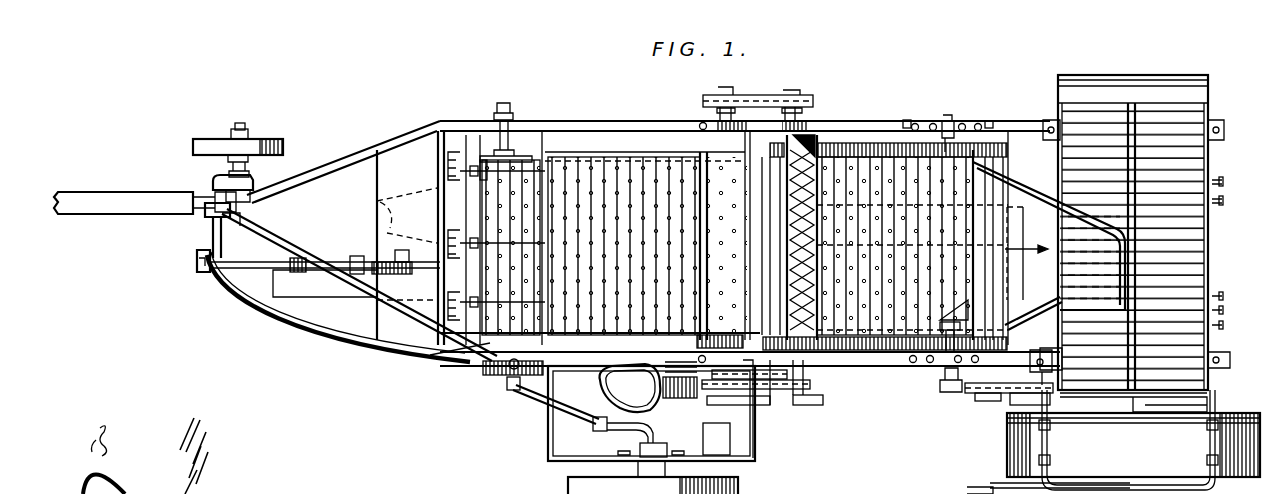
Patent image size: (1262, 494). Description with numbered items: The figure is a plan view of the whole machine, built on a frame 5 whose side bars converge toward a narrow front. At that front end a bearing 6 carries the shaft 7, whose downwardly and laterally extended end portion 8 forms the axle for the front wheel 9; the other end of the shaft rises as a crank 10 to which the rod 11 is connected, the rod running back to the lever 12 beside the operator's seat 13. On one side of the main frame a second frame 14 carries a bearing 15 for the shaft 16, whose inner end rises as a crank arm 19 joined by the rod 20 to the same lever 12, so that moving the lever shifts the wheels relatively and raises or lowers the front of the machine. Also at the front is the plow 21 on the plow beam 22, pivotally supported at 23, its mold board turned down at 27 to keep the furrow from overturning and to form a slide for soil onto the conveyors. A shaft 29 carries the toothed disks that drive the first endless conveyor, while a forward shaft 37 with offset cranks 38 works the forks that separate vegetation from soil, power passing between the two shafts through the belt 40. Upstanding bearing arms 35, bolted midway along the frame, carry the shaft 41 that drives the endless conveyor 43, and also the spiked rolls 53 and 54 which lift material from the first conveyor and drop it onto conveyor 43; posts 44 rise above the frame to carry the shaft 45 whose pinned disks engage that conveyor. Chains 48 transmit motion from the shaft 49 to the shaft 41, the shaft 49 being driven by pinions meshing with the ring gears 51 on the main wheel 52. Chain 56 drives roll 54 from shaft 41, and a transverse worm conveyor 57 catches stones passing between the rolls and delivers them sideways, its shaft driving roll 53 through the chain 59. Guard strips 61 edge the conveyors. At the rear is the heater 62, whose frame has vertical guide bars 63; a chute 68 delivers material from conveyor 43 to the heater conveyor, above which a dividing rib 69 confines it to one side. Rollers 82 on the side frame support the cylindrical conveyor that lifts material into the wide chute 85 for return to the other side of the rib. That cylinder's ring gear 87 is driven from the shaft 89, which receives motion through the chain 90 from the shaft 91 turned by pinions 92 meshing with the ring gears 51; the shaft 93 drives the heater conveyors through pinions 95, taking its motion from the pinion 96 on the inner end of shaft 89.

The frame 5 is at (856, 368).
The bearing 6 is at (222, 181).
The shaft 7 is at (244, 207).
The end portion 8 is at (243, 123).
The front wheel 9 is at (262, 140).
The crank 10 is at (206, 222).
The rod 11 is at (290, 262).
The lever 12 is at (552, 378).
The operator's seat 13 is at (630, 388).
The frame 14 is at (756, 452).
The bearing 15 is at (616, 453).
The shaft 16 is at (653, 477).
The crank arm 19 is at (612, 420).
The rod 20 is at (545, 408).
The plow 21 is at (320, 292).
The plow beam 22 is at (250, 272).
The pivot 23 is at (196, 270).
The downturned mold board portion 27 is at (378, 200).
The shaft 29 is at (510, 112).
The bearing arms 35 is at (712, 113).
The shaft 37 is at (448, 124).
The cranks 38 is at (440, 160).
The belt 40 is at (478, 362).
The shaft 41 is at (722, 160).
The endless conveyor 43 is at (843, 160).
The posts 44 is at (948, 117).
The shaft 45 is at (930, 122).
The chains 48 is at (800, 408).
The shaft 49 is at (885, 353).
The ring gears 51 is at (886, 366).
The main wheel 52 is at (1015, 206).
The roll 53 is at (660, 166).
The roll 54 is at (806, 135).
The chain 56 is at (785, 408).
The worm conveyor 57 is at (762, 178).
The chain 59 is at (758, 96).
The guard strips 61 is at (600, 166).
The heater 62 is at (1195, 122).
The vertical guide bars 63 is at (1230, 152).
The chute 68 is at (1062, 255).
The dividing rib 69 is at (1135, 250).
The rollers 82 is at (1050, 432).
The chute 85 is at (1160, 410).
The ring gear 87 is at (1234, 426).
The shaft 89 is at (1005, 435).
The chain 90 is at (1012, 398).
The shaft 91 is at (975, 384).
The pinions 92 is at (948, 382).
The shaft 93 is at (1230, 360).
The pinions 95 is at (1005, 345).
The pinion 96 is at (1055, 362).